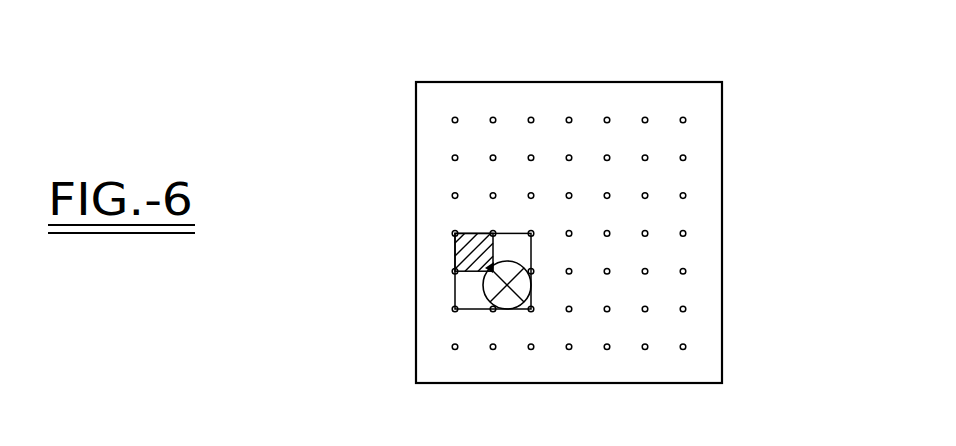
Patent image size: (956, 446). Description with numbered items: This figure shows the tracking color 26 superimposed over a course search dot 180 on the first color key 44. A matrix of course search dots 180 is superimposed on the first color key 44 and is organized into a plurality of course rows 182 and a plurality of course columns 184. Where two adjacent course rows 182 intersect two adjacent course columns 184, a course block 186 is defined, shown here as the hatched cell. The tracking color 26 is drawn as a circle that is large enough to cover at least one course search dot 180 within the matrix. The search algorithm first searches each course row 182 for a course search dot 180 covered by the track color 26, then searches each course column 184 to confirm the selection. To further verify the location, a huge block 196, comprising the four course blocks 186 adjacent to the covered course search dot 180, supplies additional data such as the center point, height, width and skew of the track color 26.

The first color key 44 is at (676, 80).
The course search dot 180 is at (651, 157).
The course row 182 is at (446, 121).
The course column 184 is at (492, 112).
The course block 186 is at (454, 247).
The tracking color 26 is at (483, 289).
The huge block 196 is at (464, 312).